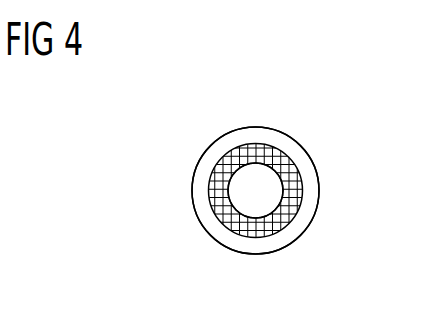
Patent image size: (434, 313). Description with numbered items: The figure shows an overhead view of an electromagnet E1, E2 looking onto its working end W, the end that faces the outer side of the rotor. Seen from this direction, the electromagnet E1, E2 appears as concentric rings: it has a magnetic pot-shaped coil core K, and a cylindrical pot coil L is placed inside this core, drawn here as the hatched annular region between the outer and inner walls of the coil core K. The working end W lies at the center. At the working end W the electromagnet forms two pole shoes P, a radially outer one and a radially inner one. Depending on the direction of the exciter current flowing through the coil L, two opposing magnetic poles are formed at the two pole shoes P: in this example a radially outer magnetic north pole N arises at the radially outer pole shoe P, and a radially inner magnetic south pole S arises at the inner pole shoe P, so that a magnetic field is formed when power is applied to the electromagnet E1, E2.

The electromagnet E1 is at (202, 184).
The electromagnet E2 is at (206, 146).
The coil core K is at (273, 174).
The coil arrangement L is at (304, 189).
The working end W is at (267, 206).
The pole shoe P is at (255, 196).
The magnetic south pole S is at (232, 191).
The magnetic north pole N is at (308, 216).